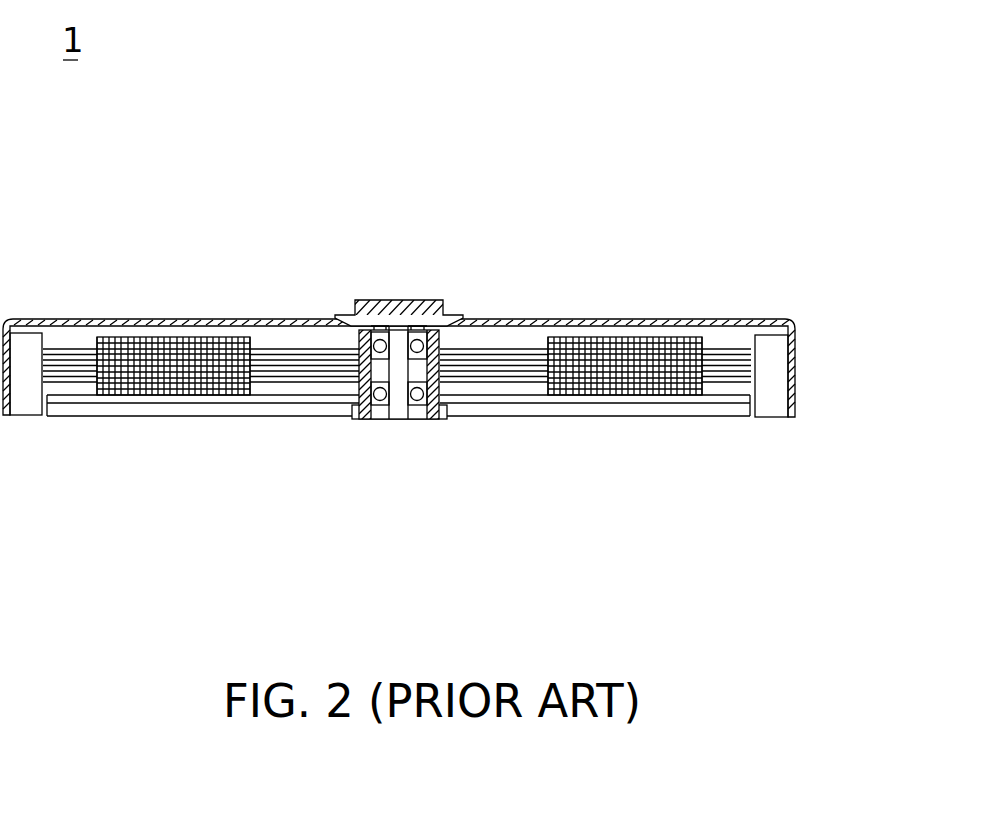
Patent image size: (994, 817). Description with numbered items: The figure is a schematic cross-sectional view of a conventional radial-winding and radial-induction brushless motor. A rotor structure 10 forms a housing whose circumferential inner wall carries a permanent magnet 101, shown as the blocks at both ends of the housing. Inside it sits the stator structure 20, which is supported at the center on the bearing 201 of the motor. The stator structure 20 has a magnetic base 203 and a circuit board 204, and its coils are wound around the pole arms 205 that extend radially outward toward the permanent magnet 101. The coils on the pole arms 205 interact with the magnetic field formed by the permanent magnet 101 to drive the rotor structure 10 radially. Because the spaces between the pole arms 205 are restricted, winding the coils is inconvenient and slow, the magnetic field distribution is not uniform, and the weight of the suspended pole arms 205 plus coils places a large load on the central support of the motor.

The rotor structure 10 is at (152, 297).
The permanent magnet 101 is at (783, 383).
The stator structure 20 is at (397, 389).
The bearing 201 is at (390, 400).
The magnetic base 203 is at (522, 412).
The circuit board 204 is at (238, 398).
The pole arms 205 is at (502, 360).